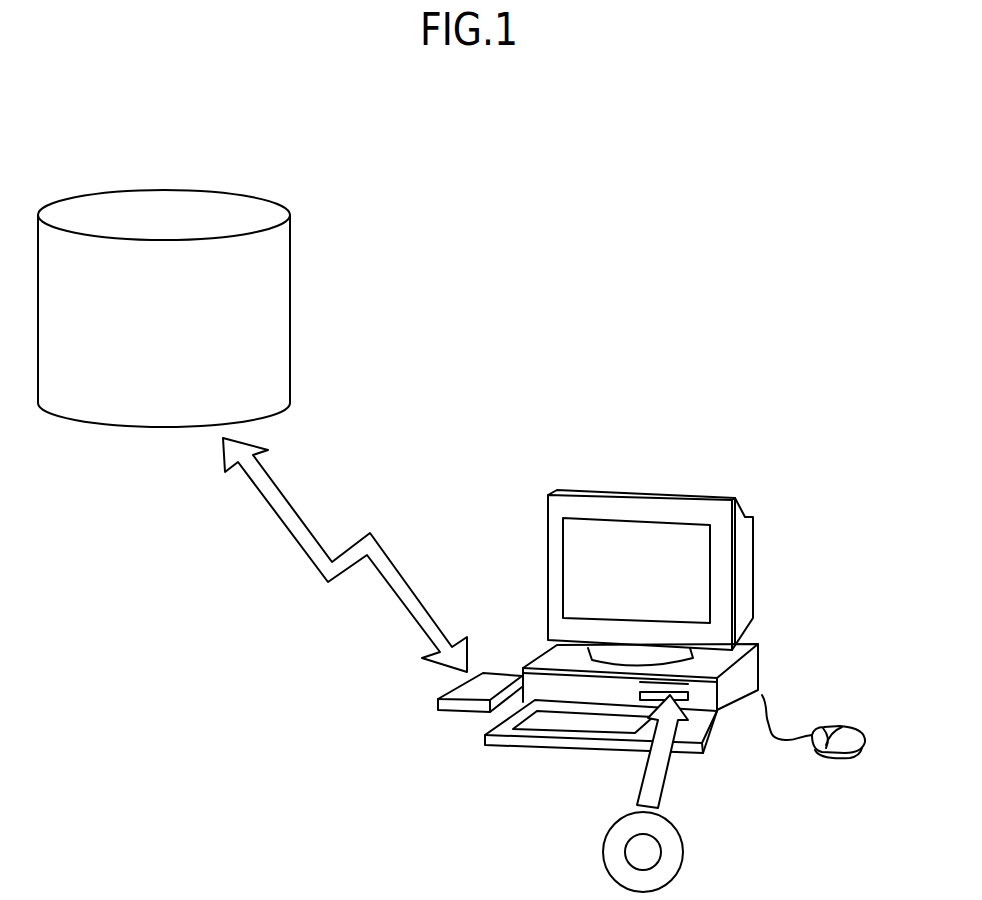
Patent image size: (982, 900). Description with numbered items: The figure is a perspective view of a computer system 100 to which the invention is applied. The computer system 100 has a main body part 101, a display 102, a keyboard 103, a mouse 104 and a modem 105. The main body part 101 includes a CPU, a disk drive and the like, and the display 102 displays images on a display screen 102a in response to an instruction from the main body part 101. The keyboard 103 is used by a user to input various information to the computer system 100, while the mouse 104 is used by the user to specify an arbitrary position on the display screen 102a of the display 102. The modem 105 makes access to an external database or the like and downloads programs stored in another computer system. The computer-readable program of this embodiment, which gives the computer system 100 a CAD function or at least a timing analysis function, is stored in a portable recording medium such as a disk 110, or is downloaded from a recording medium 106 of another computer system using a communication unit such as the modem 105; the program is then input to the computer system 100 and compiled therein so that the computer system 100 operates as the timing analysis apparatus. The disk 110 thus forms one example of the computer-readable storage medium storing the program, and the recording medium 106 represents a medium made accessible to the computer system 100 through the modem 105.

The computer system 100 is at (689, 586).
The main body part 101 is at (763, 662).
The display 102 is at (650, 557).
The display screen 102a is at (590, 533).
The keyboard 103 is at (505, 745).
The mouse 104 is at (840, 760).
The modem 105 is at (437, 702).
The recording medium 106 is at (110, 208).
The disk 110 is at (684, 843).